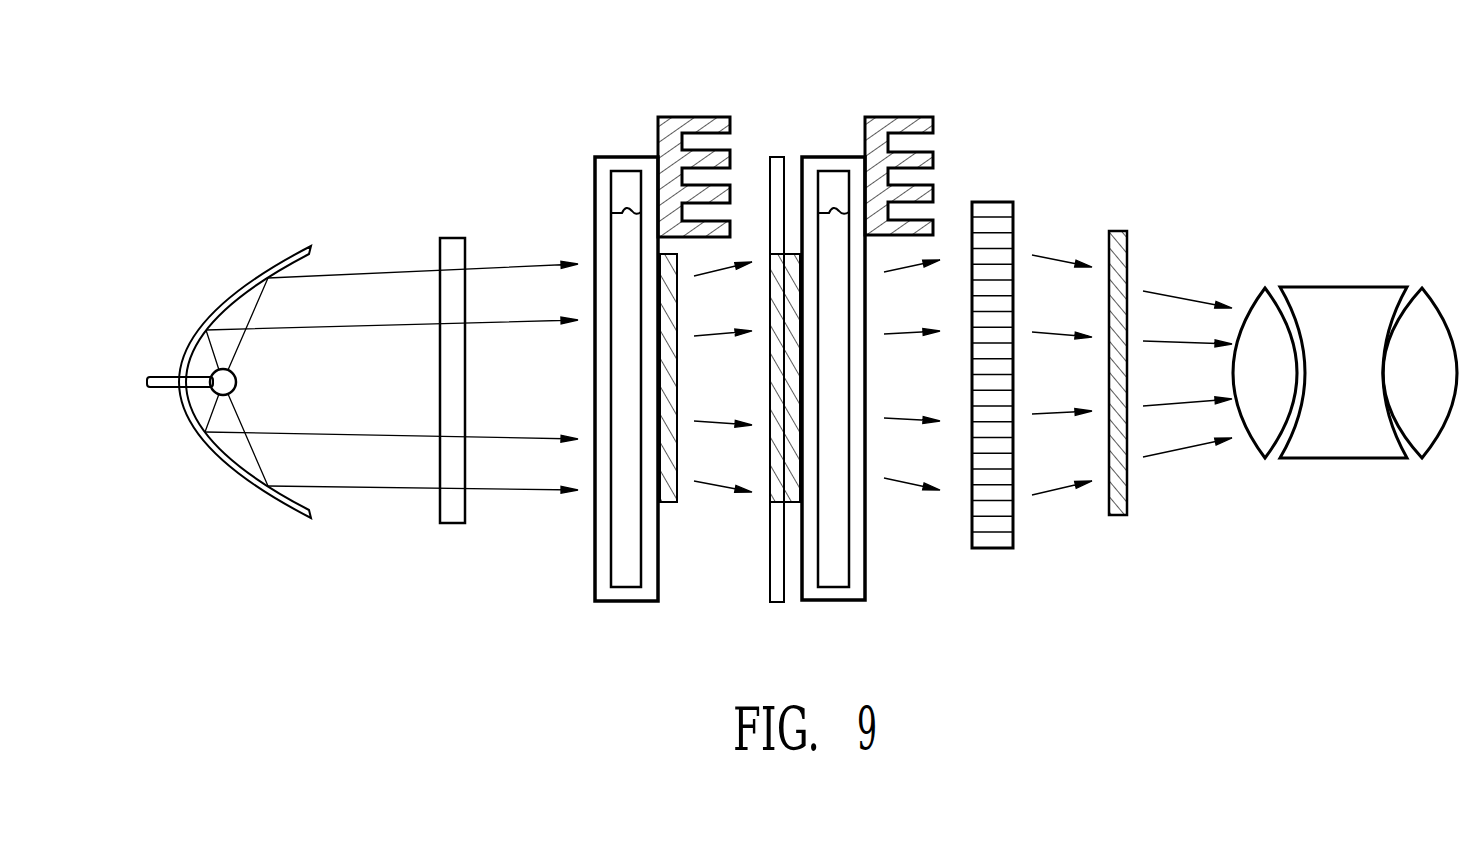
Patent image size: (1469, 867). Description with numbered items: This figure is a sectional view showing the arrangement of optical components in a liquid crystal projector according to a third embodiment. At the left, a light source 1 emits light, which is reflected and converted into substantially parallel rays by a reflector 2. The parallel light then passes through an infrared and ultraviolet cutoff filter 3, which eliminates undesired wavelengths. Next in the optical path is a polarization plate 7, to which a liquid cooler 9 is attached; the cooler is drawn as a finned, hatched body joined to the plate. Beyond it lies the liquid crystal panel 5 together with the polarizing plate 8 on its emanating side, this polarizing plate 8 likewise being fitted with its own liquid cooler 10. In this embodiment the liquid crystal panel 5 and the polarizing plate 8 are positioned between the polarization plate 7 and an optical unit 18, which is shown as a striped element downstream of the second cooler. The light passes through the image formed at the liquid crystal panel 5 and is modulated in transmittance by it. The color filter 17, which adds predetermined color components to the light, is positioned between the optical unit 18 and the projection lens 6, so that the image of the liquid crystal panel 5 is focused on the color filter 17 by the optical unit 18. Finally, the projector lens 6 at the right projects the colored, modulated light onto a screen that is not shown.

The light source 1 is at (210, 392).
The reflector 2 is at (277, 501).
The infrared and ultraviolet cutoff filter 3 is at (437, 508).
The liquid crystal panel 5 is at (777, 603).
The projector lens 6 is at (1237, 490).
The polarization plate 7 is at (670, 505).
The polarizing plate 8 is at (793, 505).
The liquid cooler 9 is at (593, 82).
The liquid cooler 10 is at (802, 82).
The color filter 17 is at (1118, 516).
The optical unit 18 is at (988, 549).